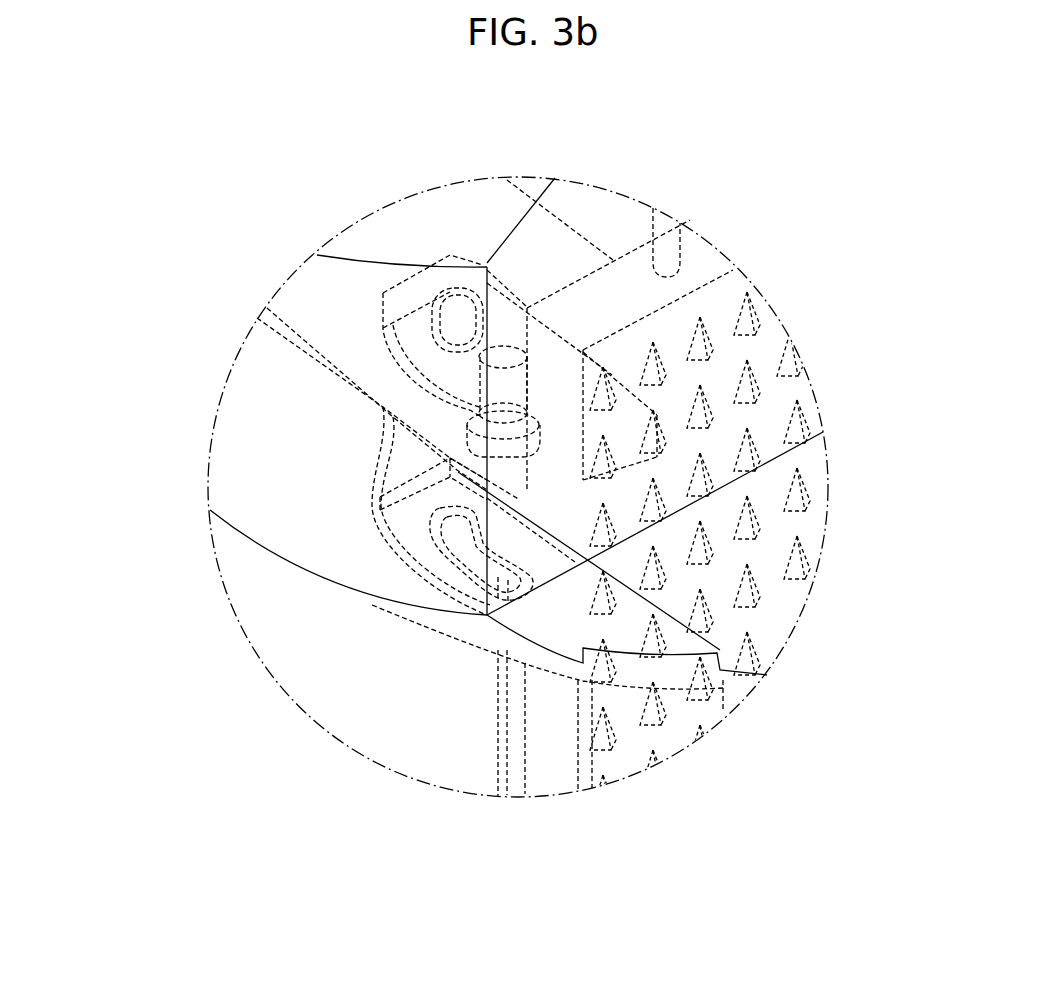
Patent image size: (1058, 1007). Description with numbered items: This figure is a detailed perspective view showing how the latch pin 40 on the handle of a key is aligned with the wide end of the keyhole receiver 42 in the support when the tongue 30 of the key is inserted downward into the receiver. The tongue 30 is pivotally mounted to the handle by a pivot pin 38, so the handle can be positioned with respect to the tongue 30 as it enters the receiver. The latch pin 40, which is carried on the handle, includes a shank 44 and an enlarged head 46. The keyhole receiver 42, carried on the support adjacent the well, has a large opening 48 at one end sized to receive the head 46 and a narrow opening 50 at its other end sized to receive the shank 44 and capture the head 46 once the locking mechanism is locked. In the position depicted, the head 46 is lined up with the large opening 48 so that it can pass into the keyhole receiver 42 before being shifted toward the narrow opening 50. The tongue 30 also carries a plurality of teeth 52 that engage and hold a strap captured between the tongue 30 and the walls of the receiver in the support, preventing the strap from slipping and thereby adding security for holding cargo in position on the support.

The tongue 30 is at (768, 338).
The pivot pin 38 is at (683, 255).
The latch pin 40 is at (508, 357).
The keyhole receiver 42 is at (455, 575).
The shank 44 is at (483, 380).
The enlarged head 46 is at (470, 455).
The large opening 48 is at (497, 650).
The narrow opening 50 is at (452, 540).
The teeth 52 is at (806, 497).